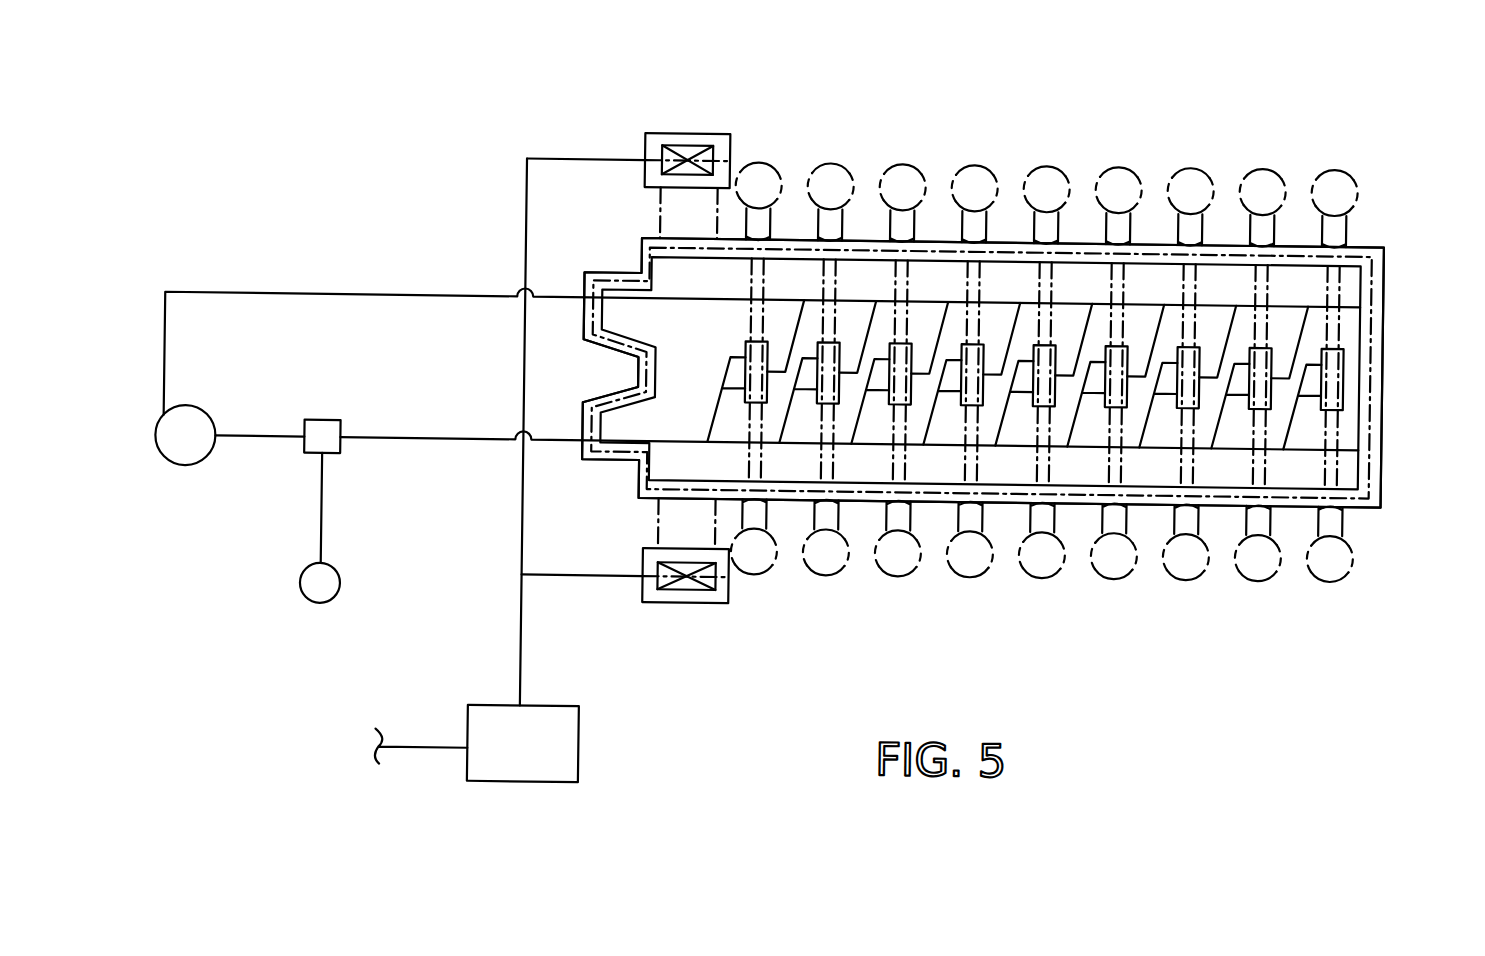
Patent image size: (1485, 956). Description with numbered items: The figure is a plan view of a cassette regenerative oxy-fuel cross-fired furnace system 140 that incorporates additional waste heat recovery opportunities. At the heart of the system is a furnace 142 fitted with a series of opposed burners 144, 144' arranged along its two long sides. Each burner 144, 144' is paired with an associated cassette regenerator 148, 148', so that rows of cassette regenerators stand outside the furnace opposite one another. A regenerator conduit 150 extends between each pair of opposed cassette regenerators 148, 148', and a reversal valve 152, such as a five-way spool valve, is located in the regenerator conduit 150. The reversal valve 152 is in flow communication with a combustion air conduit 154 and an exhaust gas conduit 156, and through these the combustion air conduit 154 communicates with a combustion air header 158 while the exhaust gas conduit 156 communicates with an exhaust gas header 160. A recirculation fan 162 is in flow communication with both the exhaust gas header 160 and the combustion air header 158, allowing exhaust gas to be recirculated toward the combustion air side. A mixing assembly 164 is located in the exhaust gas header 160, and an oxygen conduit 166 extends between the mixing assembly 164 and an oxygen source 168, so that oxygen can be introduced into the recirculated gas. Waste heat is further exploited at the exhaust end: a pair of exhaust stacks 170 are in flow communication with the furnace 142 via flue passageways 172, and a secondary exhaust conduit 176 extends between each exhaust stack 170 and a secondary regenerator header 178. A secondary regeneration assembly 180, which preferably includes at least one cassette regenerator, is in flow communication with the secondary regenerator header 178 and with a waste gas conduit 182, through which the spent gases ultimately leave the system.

The cassette regenerative oxy-fuel cross-fired furnace system 140 is at (973, 106).
The furnace 142 is at (1357, 278).
The burner 144 is at (1115, 168).
The burner 144' is at (1042, 577).
The cassette regenerator 148 is at (1048, 150).
The cassette regenerator 148' is at (1041, 592).
The regenerator conduit 150 is at (752, 277).
The reversal valve 152 is at (747, 342).
The combustion air conduit 154 is at (713, 411).
The exhaust gas conduit 156 is at (1365, 322).
The combustion air header 158 is at (431, 441).
The exhaust gas header 160 is at (301, 297).
The recirculation fan 162 is at (191, 411).
The mixing assembly 164 is at (308, 455).
The oxygen conduit 166 is at (324, 540).
The oxygen source 168 is at (346, 588).
The exhaust stack 170 is at (676, 144).
The flue passageway 172 is at (680, 213).
The secondary exhaust conduit 176 is at (564, 158).
The secondary regenerator header 178 is at (526, 204).
The secondary regeneration assembly 180 is at (586, 756).
The waste gas conduit 182 is at (424, 749).